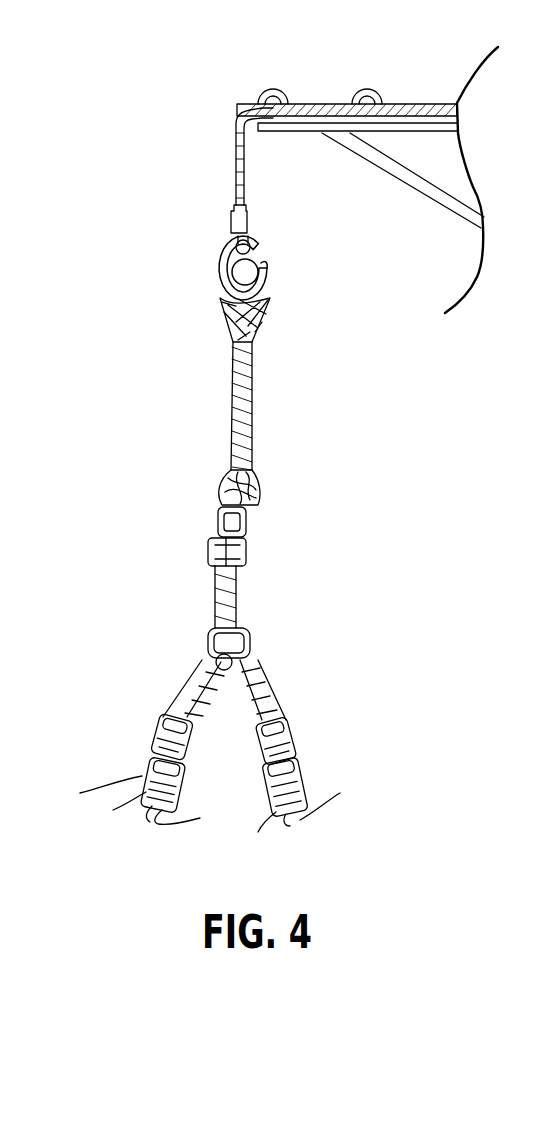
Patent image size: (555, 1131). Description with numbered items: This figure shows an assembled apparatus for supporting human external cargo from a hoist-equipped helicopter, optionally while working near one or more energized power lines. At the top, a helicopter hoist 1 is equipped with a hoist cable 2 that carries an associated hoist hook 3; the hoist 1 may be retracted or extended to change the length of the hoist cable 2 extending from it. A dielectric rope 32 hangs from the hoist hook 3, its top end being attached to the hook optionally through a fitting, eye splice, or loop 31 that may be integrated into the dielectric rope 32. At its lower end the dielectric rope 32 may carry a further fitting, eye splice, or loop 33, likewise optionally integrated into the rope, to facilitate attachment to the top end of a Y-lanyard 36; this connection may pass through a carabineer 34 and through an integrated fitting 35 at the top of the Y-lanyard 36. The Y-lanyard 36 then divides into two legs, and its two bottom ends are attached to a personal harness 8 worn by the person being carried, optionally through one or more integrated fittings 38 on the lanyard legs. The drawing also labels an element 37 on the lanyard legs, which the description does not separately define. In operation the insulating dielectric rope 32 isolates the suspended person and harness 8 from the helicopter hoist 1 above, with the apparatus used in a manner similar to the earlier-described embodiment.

The helicopter hoist 1 is at (297, 133).
The hoist cable 2 is at (402, 103).
The hoist hook 3 is at (222, 252).
The personal harness 8 is at (88, 792).
The fitting, eye splice, or loop 31 is at (267, 307).
The dielectric rope 32 is at (253, 417).
The fitting, eye splice, or loop 33 is at (260, 490).
The carabineer 34 is at (250, 523).
The integrated fitting 35 is at (247, 553).
The Y-lanyard 36 is at (240, 617).
The strap adjuster 37 is at (292, 728).
The integrated fittings 38 is at (300, 762).